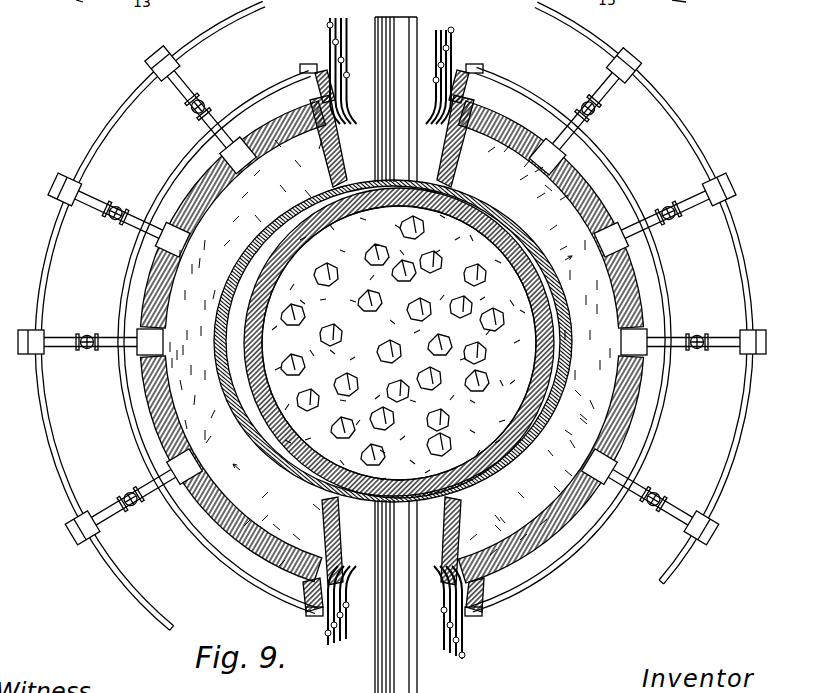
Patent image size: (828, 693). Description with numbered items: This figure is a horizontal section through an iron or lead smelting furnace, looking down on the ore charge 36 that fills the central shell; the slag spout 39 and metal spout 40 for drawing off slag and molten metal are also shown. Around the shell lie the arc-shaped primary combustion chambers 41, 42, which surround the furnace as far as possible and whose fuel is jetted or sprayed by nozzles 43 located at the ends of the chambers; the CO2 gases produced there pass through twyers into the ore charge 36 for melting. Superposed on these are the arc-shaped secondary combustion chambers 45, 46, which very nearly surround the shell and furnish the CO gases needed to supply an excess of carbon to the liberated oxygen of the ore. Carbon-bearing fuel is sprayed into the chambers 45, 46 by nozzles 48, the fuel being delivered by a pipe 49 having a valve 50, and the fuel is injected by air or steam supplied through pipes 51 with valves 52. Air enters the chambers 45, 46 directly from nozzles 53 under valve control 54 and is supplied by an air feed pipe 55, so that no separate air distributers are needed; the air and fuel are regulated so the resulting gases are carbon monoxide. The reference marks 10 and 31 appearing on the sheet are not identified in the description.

The apparatus 10 is at (790, 4).
The material charge in drum 31 is at (280, 300).
The ore charge 36 is at (430, 502).
The slag spout 39 is at (420, 10).
The metal spout 40 is at (328, 18).
The primary combustion chamber 41 is at (122, 294).
The primary combustion chamber 42 is at (660, 290).
The nozzles 43 is at (322, 66).
The secondary combustion chamber 45 is at (190, 200).
The secondary combustion chamber 46 is at (622, 197).
The nozzles 48 is at (334, 128).
The pipe 49 is at (349, 98).
The valve 50 is at (346, 72).
The pipes 51 is at (341, 40).
The valves 52 is at (337, 56).
The nozzles 53 is at (240, 140).
The valve control 54 is at (125, 229).
The air feed pipe 55 is at (110, 116).